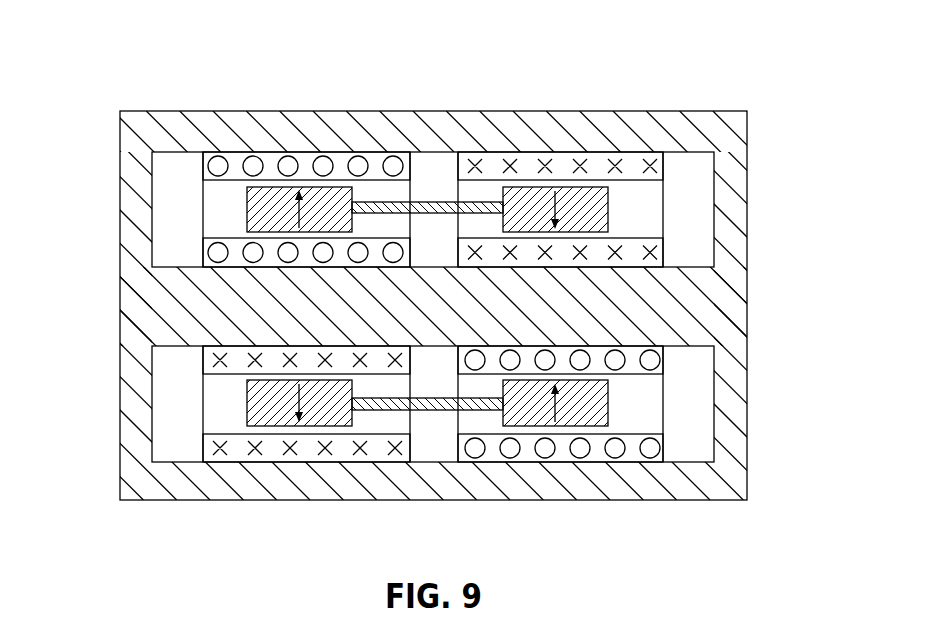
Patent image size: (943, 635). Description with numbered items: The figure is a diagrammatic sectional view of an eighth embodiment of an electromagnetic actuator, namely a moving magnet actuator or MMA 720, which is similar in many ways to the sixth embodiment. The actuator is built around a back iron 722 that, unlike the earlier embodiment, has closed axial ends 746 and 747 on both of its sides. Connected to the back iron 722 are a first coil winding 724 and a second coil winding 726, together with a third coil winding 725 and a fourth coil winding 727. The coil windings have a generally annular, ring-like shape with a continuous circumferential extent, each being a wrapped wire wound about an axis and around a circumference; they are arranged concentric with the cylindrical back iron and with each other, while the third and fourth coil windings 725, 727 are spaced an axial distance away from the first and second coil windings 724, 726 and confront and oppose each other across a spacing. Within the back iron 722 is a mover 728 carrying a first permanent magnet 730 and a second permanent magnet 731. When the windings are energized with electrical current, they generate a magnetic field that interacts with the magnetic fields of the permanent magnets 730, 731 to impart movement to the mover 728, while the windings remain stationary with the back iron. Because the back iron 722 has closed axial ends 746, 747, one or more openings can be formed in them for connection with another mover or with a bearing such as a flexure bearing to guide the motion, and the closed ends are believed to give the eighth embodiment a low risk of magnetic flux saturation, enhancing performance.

The MMA 720 is at (187, 94).
The back iron 722 is at (424, 108).
The first coil winding 724 is at (666, 163).
The third coil winding 725 is at (201, 163).
The second coil winding 726 is at (666, 251).
The fourth coil winding 727 is at (201, 251).
The mover 728 is at (431, 411).
The first permanent magnet 730 is at (609, 401).
The second permanent magnet 731 is at (246, 204).
The closed axial end 746 is at (132, 400).
The closed axial end 747 is at (730, 389).